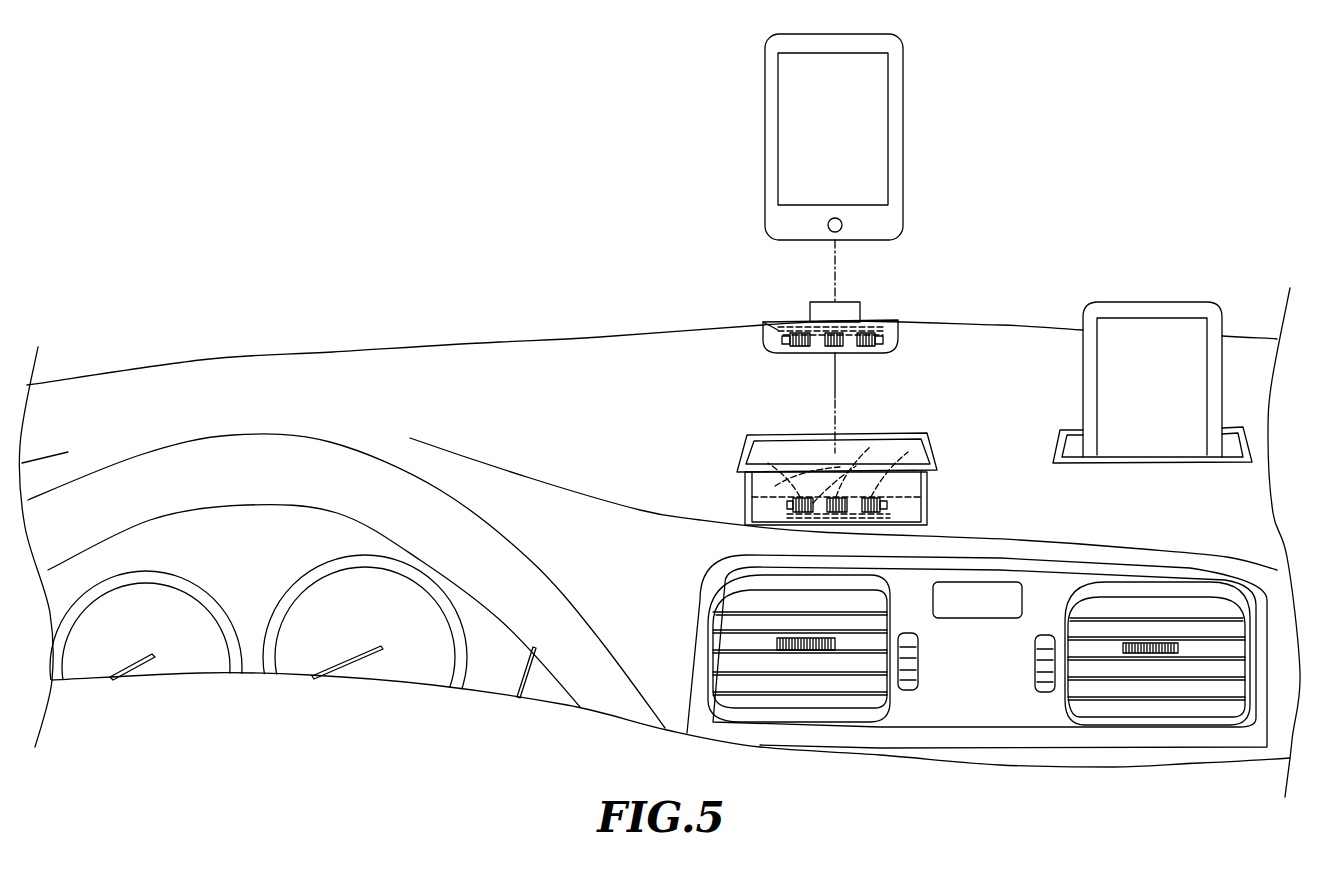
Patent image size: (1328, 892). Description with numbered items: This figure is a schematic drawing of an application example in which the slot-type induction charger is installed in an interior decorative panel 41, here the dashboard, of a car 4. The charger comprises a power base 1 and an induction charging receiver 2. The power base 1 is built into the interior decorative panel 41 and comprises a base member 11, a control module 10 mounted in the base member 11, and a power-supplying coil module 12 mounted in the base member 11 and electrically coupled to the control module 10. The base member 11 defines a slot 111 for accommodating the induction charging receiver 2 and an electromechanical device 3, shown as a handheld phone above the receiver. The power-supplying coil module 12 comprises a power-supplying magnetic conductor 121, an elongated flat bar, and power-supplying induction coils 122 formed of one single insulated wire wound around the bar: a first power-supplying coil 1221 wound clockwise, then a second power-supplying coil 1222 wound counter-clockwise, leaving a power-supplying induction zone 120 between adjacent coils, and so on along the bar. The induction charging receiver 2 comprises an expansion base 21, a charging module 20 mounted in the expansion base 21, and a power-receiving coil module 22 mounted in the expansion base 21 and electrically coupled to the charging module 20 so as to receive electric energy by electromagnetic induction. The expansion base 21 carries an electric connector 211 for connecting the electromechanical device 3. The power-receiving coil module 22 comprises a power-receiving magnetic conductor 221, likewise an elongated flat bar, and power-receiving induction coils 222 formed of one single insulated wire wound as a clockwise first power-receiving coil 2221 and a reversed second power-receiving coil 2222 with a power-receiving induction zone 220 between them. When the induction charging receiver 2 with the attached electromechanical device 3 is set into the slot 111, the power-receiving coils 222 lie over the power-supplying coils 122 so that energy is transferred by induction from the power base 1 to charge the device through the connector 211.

The power base 1 is at (781, 468).
The control module 10 is at (893, 515).
The base member 11 is at (837, 427).
The slot 111 is at (813, 445).
The power-supplying coil module 12 is at (781, 475).
The power-supplying induction zone 120 is at (857, 499).
The power-supplying magnetic conductor 121 is at (777, 508).
The power-supplying induction coils 122 is at (781, 469).
The first power-supplying coil 1221 is at (790, 500).
The second power-supplying coil 1222 is at (770, 472).
The induction charging receiver 2 is at (777, 316).
The charging module 20 is at (890, 331).
The expansion base 21 is at (777, 349).
The electric connector 211 is at (826, 312).
The power-receiving coil module 22 is at (878, 346).
The power-receiving induction zone 220 is at (847, 333).
The power-receiving magnetic conductor 221 is at (785, 337).
The power-receiving induction coils 222 is at (776, 302).
The first power-receiving coil 2221 is at (795, 338).
The second power-receiving coil 2222 is at (823, 328).
The electromechanical device 3 is at (905, 97).
The car 4 is at (181, 331).
The interior decorative panel 41 is at (500, 363).